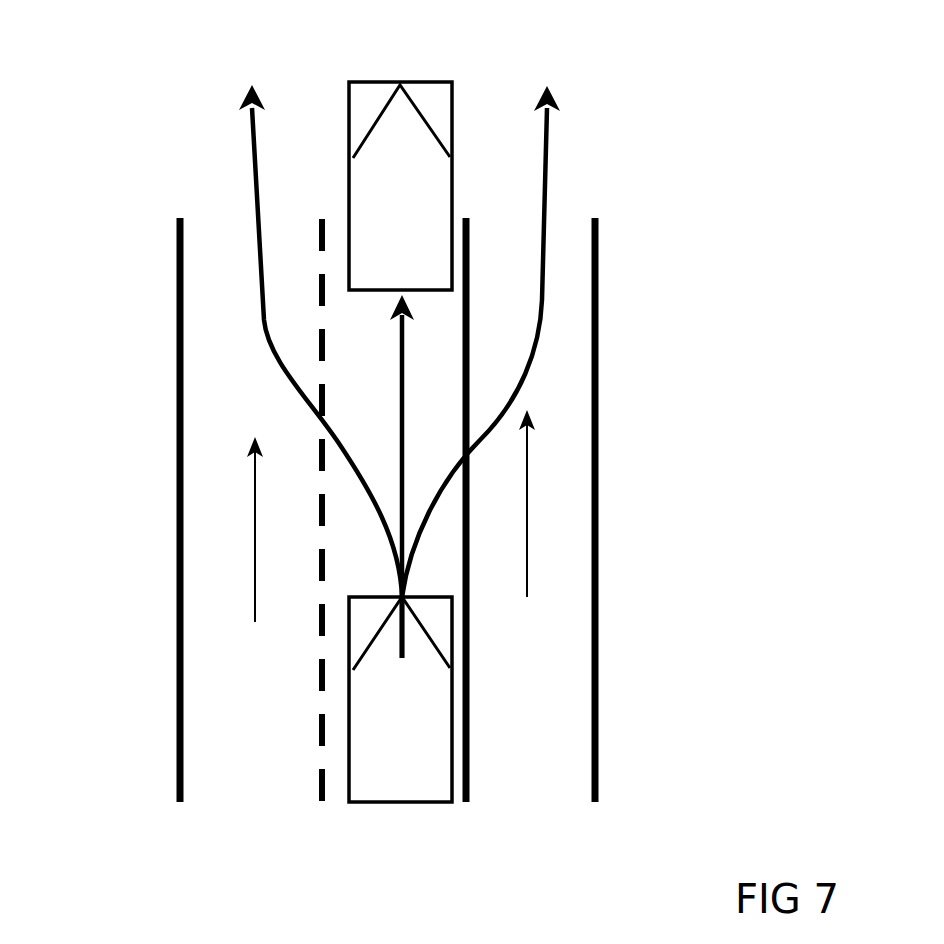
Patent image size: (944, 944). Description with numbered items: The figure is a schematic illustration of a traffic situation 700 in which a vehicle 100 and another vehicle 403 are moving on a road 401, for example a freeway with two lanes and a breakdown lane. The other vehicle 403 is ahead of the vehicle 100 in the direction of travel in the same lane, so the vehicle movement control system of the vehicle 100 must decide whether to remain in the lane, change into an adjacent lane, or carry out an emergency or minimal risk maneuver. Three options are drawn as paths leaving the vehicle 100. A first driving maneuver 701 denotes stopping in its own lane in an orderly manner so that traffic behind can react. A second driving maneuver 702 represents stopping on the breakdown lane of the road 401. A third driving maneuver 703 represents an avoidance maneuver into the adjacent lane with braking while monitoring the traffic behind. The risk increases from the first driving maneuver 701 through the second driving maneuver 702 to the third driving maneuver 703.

The traffic situation 700 is at (134, 76).
The road 401 is at (178, 336).
The other vehicle 403 is at (452, 104).
The vehicle 100 is at (383, 802).
The first driving maneuver 701 is at (405, 358).
The second driving maneuver 702 is at (549, 160).
The third driving maneuver 703 is at (248, 162).